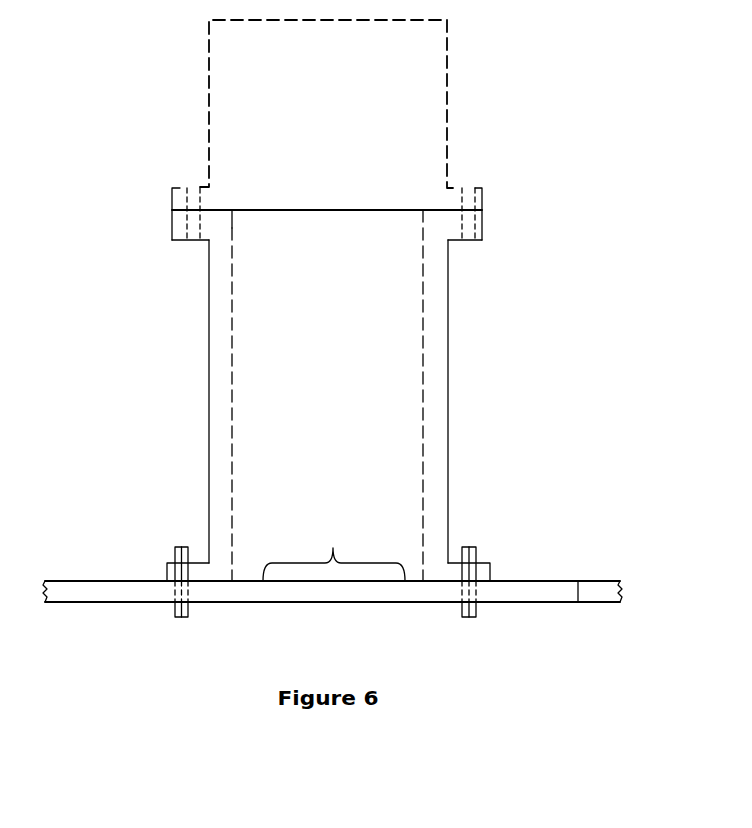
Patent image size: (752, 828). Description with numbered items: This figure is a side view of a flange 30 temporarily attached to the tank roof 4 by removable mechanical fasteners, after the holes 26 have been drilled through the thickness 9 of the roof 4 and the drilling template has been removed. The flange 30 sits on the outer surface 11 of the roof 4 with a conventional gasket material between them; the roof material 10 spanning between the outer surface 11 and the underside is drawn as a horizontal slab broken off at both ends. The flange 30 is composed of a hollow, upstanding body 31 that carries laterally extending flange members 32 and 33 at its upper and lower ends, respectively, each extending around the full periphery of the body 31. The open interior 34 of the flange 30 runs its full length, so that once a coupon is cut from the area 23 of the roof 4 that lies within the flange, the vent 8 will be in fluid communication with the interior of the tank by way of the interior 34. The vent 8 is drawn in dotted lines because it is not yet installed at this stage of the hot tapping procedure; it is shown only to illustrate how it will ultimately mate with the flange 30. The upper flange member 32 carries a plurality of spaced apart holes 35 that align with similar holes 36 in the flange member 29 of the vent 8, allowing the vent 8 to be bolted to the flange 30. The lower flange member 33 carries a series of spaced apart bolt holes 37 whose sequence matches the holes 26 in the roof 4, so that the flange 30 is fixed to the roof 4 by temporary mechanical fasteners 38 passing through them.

The vent 8 is at (448, 53).
The flange member 29 is at (203, 185).
The holes 36 is at (462, 199).
The holes 35 is at (200, 224).
The flange member 32 is at (483, 228).
The open interior 34 is at (249, 284).
The upstanding body 31 is at (437, 403).
The flange 30 is at (495, 428).
The bolt holes 37 is at (175, 575).
The area 23 is at (334, 552).
The flange member 33 is at (492, 562).
The outer surface 11 is at (468, 595).
The temporary mechanical fasteners 38 is at (500, 581).
The holes 26 is at (187, 602).
The plate 10 is at (521, 602).
The thickness 9 is at (578, 602).
The roof 4 is at (102, 612).